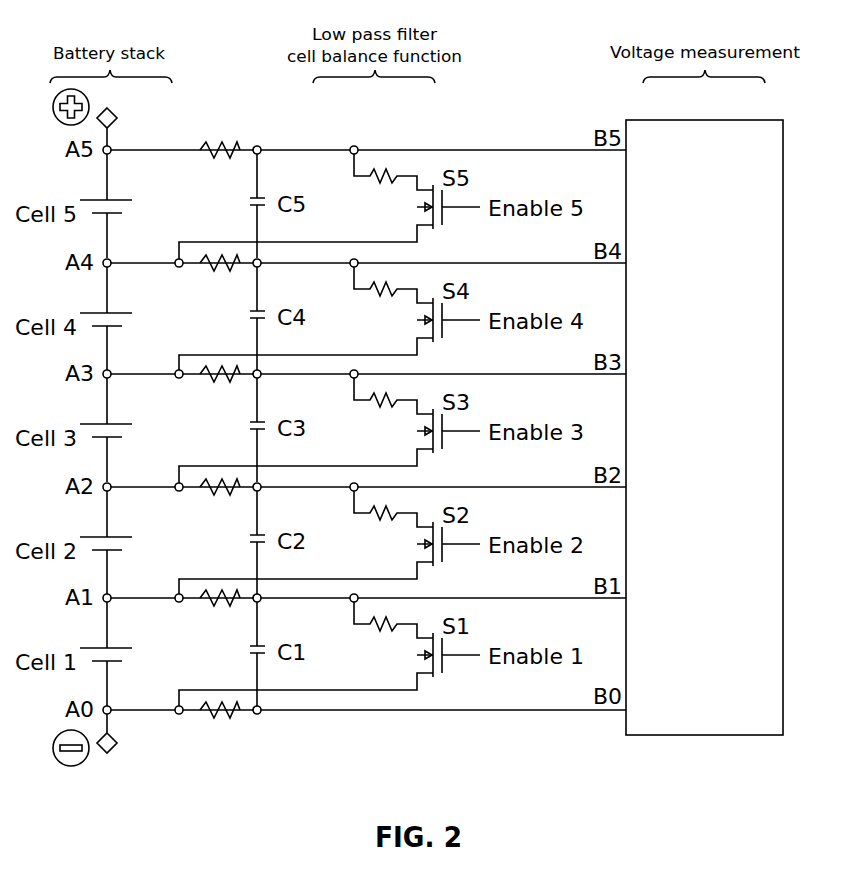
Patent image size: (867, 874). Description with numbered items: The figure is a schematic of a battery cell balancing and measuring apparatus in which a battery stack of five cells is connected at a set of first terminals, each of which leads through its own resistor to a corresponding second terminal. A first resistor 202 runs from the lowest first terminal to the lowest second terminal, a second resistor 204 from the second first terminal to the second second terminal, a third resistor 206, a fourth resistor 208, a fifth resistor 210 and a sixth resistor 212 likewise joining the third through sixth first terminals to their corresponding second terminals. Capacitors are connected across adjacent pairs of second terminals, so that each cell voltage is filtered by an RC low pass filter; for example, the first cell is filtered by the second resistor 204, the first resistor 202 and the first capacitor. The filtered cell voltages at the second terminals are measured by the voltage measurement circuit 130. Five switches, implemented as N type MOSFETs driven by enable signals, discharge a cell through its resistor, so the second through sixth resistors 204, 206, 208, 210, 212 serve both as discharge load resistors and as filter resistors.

The first resistor 202 is at (218, 722).
The second resistor 204 is at (218, 610).
The third resistor 206 is at (218, 499).
The fourth resistor 208 is at (218, 386).
The fifth resistor 210 is at (218, 275).
The sixth resistor 212 is at (218, 162).
The voltage measurement circuit 130 is at (705, 737).